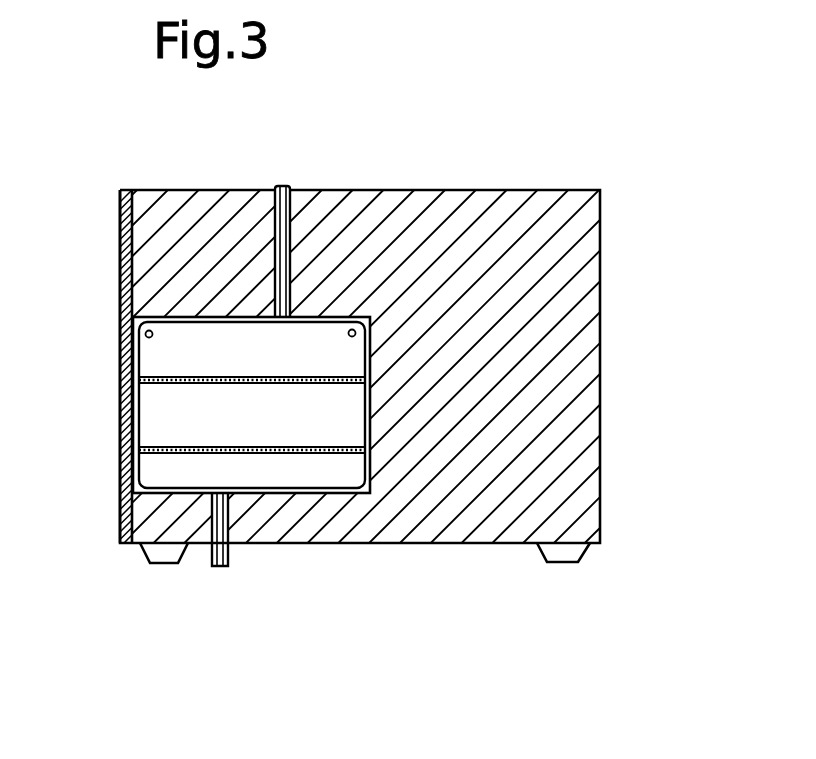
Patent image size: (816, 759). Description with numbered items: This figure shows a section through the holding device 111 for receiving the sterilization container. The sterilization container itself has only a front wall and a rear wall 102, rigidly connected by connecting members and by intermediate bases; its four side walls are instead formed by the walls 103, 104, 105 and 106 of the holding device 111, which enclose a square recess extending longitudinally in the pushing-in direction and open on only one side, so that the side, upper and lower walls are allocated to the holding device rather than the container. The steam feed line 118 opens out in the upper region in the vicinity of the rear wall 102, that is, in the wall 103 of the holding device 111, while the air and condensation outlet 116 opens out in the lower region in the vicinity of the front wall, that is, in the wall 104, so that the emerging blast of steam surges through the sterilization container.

The rear wall 102 is at (177, 410).
The wall 103 is at (207, 316).
The wall 104 is at (318, 495).
The wall 105 is at (128, 430).
The wall 106 is at (372, 437).
The holding device 111 is at (601, 330).
The air and condensation outlet 116 is at (208, 567).
The steam feed line 118 is at (293, 175).